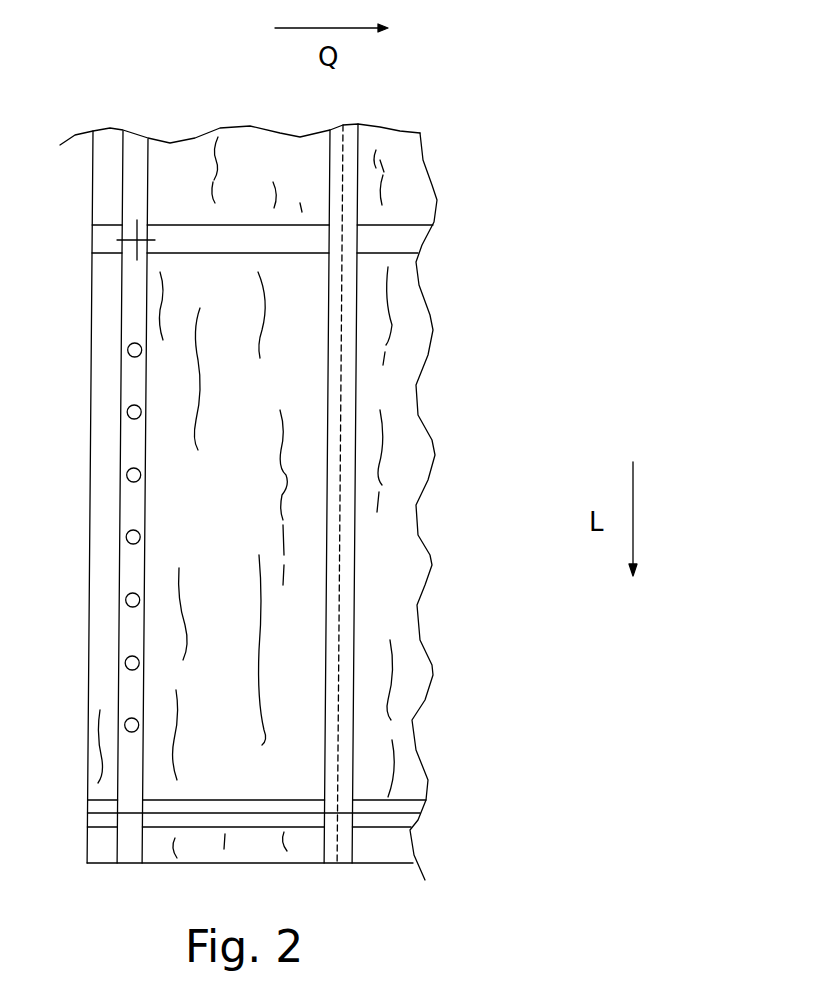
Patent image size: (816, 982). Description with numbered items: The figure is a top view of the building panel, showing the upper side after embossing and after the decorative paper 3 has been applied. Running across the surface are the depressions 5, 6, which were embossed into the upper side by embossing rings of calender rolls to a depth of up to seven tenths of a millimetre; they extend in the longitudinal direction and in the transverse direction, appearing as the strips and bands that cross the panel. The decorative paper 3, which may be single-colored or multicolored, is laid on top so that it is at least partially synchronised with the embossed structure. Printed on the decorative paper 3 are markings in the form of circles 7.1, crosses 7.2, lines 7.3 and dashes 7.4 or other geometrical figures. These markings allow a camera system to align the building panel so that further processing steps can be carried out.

The decorative paper 3 is at (378, 170).
The depression 5 is at (128, 570).
The depression 6 is at (225, 808).
The circles 7.1 is at (135, 475).
The crosses 7.2 is at (137, 240).
The lines 7.3 is at (130, 813).
The dashes 7.4 is at (342, 572).